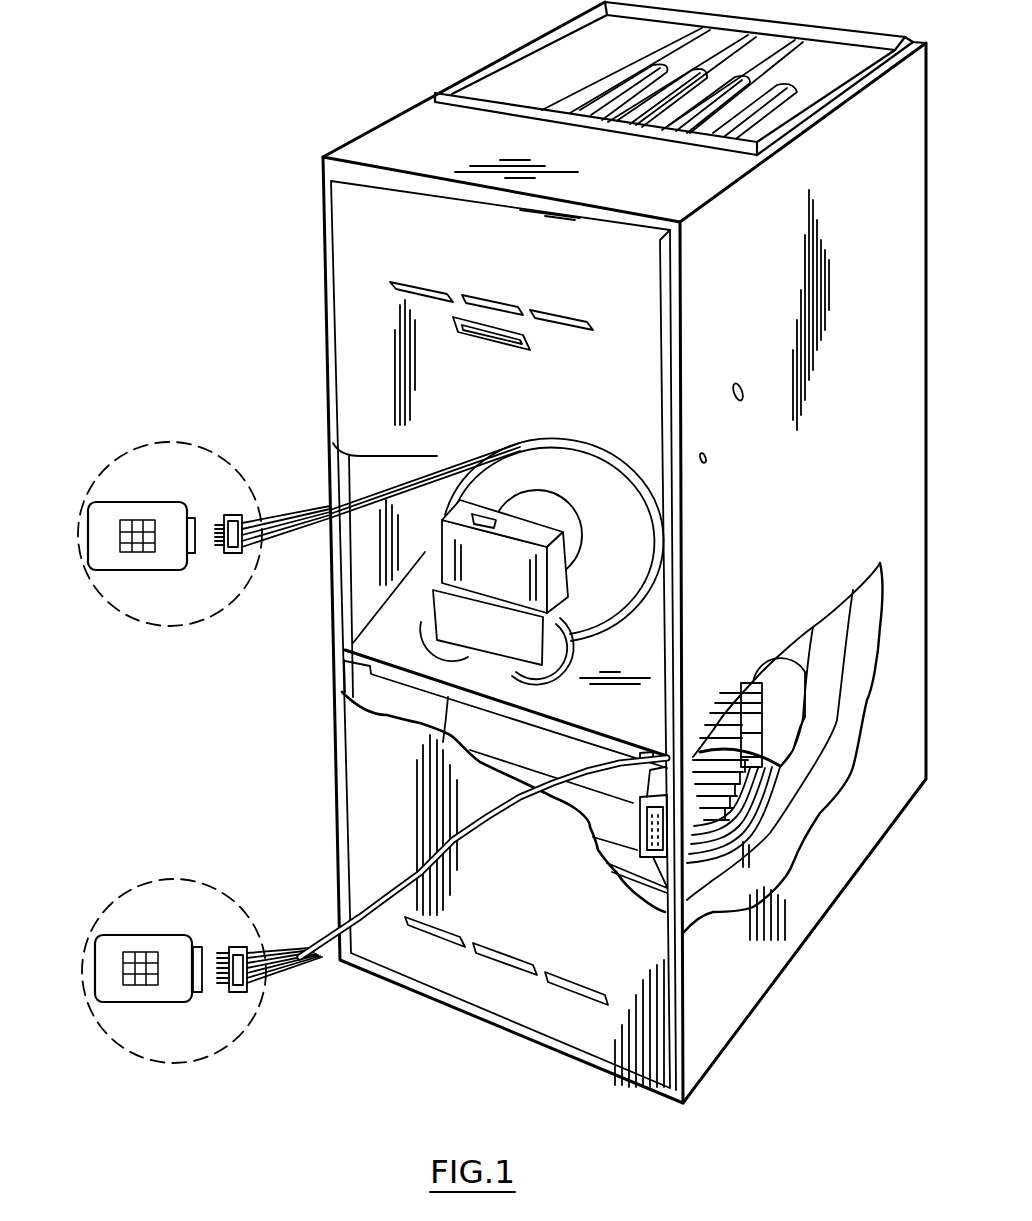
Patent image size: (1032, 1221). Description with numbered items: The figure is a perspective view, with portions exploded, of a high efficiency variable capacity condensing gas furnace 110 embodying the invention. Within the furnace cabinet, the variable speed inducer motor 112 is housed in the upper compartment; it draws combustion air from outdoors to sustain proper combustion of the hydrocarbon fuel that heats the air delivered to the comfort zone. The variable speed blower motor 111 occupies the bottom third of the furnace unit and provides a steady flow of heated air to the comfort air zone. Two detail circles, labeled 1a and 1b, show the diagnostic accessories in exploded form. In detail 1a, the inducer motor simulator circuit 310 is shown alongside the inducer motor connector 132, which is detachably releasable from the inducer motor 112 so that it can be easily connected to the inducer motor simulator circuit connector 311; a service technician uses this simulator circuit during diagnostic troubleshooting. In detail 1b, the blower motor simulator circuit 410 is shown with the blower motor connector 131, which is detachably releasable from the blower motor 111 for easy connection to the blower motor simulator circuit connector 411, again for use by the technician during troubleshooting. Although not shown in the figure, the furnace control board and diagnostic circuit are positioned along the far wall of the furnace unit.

The high efficiency variable capacity condensing gas furnace 110 is at (322, 185).
The variable speed blower motor 111 is at (715, 880).
The variable speed inducer motor 112 is at (583, 477).
The blower motor connector 131 is at (240, 995).
The inducer motor connector 132 is at (235, 555).
The inducer motor simulator circuit 310 is at (108, 520).
The inducer motor simulator circuit connector 311 is at (193, 553).
The blower motor simulator circuit 410 is at (105, 957).
The blower motor simulator circuit connector 411 is at (200, 993).
The exploded view of the inducer motor simulator circuit 1a is at (174, 441).
The exploded view of the blower motor simulator circuit 1b is at (183, 875).